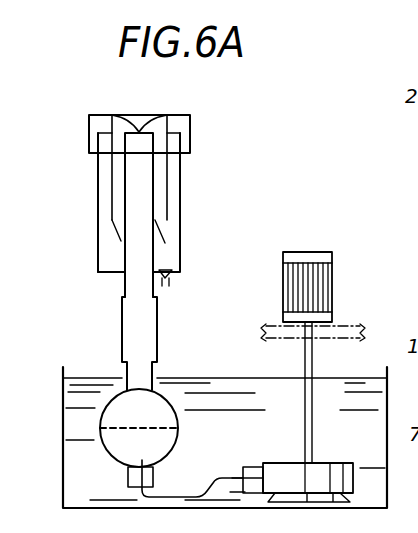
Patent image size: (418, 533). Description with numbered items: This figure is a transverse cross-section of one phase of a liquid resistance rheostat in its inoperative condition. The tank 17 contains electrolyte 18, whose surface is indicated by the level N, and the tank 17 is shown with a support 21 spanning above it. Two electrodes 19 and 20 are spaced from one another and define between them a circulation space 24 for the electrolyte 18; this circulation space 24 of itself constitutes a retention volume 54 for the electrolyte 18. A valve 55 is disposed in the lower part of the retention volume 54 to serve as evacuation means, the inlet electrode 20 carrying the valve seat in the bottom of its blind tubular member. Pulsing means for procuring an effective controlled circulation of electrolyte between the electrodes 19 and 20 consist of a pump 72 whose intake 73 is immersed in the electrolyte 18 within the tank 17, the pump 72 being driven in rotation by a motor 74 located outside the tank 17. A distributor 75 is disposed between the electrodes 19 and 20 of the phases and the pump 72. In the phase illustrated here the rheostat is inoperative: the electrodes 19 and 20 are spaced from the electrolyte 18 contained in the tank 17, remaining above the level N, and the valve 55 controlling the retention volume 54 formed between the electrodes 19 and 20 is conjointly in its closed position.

The tank 17 is at (63, 368).
The electrolyte 18 is at (225, 418).
The electrode 19 is at (97, 191).
The inlet electrode 20 is at (89, 115).
The support plate 21 is at (355, 323).
The circulation space 24 is at (112, 247).
The retention volume 54 is at (111, 271).
The valve 55 is at (174, 262).
The pump 72 is at (342, 462).
The intake 73 is at (331, 503).
The motor 74 is at (332, 272).
The distributor 75 is at (100, 420).
The level N is at (93, 376).